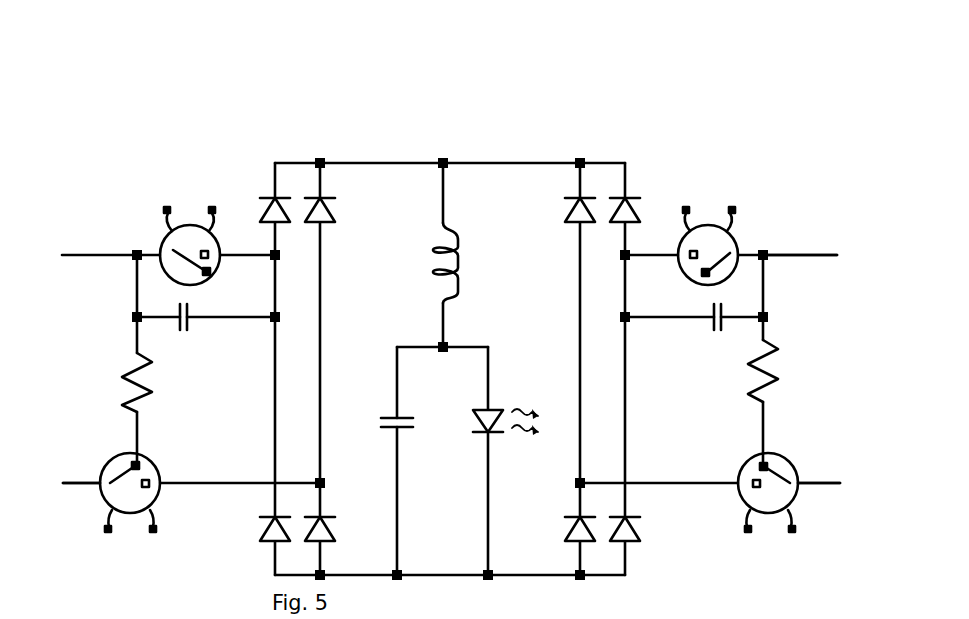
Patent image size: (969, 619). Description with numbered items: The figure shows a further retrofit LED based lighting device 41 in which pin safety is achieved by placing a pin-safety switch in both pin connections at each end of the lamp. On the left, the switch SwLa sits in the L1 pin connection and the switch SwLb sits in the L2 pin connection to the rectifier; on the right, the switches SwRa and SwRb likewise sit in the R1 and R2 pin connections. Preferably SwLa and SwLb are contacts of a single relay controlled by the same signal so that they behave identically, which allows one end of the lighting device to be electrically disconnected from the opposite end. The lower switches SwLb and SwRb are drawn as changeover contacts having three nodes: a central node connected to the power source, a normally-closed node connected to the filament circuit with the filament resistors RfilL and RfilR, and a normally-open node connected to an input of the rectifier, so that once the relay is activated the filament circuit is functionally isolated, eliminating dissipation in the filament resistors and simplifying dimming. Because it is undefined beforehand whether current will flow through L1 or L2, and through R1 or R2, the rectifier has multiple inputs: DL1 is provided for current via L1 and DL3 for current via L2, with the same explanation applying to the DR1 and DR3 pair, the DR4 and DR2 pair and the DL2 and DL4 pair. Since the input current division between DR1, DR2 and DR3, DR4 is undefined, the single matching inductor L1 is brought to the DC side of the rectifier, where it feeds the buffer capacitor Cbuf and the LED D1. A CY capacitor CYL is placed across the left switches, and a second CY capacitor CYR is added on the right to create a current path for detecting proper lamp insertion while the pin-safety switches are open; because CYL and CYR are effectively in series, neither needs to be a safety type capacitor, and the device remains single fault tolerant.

The retrofit LED based lighting device 41 is at (655, 108).
The inductor L1 is at (460, 263).
The buffer capacitor Cbuf is at (417, 410).
The LED D1 is at (505, 408).
The rectifier diode DL1 is at (260, 196).
The rectifier diode DL2 is at (252, 529).
The rectifier diode DL3 is at (341, 210).
The rectifier diode DL4 is at (341, 529).
The rectifier diode DR1 is at (641, 196).
The rectifier diode DR2 is at (651, 528).
The rectifier diode DR3 is at (556, 209).
The rectifier diode DR4 is at (556, 529).
The CY capacitor CYL is at (180, 328).
The second CY capacitor CYR is at (719, 330).
The filament resistor RfilL is at (118, 382).
The filament resistor RfilR is at (785, 371).
The pin-safety switch SwLa is at (190, 231).
The pin-safety switch SwLb is at (150, 486).
The pin-safety switch SwRa is at (709, 234).
The pin-safety switch SwRb is at (752, 482).
The L2 pin connection L2 is at (67, 485).
The R1 pin connection R1 is at (815, 256).
The R2 pin connection R2 is at (832, 486).